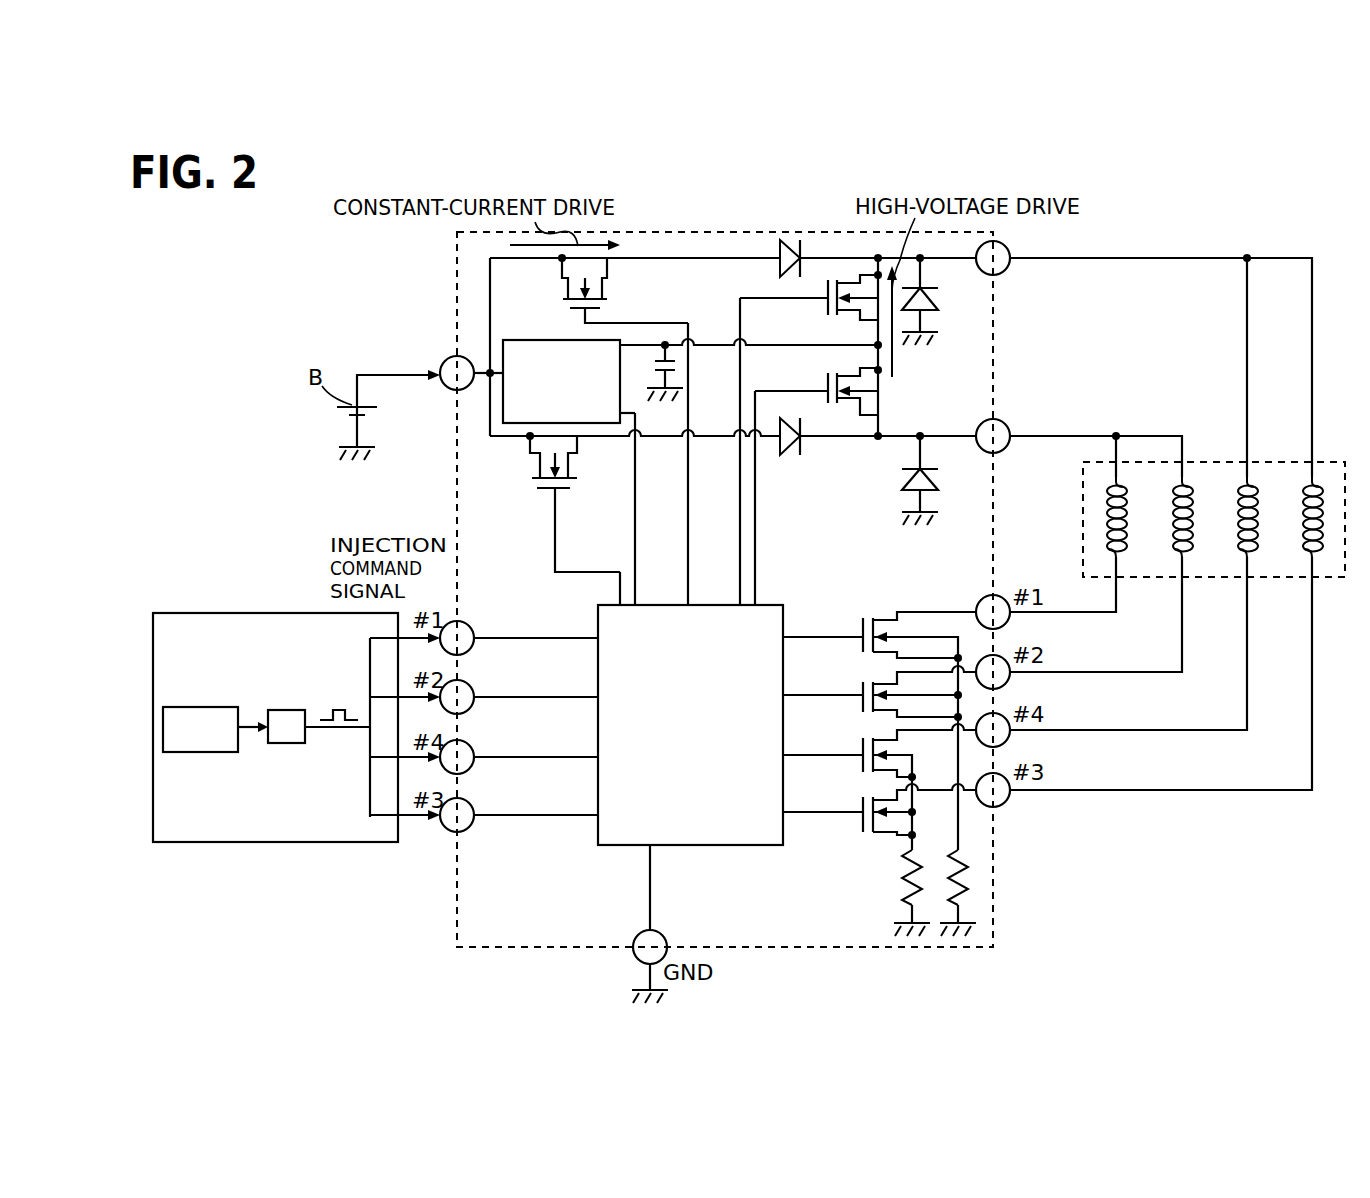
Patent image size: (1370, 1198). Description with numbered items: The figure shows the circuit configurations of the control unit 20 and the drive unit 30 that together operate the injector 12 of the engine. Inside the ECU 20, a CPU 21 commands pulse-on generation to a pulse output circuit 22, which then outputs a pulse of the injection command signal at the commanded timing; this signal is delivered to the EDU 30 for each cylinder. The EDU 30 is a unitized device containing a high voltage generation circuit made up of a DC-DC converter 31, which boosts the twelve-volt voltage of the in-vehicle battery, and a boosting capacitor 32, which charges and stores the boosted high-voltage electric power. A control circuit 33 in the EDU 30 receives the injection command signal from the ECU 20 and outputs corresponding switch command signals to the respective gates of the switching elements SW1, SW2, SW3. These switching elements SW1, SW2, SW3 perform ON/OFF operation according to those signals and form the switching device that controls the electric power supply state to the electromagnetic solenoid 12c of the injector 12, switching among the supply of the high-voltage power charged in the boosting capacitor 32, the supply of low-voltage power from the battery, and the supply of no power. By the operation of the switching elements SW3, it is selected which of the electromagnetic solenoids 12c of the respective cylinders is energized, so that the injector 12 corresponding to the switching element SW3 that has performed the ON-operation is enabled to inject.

The injector 12 is at (1223, 496).
The electromagnetic solenoid 12c is at (1120, 553).
The control unit (ECU) 20 is at (296, 734).
The CPU 21 is at (197, 707).
The pulse output circuit 22 is at (285, 710).
The drive unit (EDU) 30 is at (645, 232).
The DC-DC converter 31 is at (518, 338).
The boosting capacitor 32 is at (665, 355).
The control circuit 33 is at (742, 845).
The switching element SW1 is at (837, 317).
The switching element SW2 is at (608, 298).
The switching element SW3 is at (860, 625).